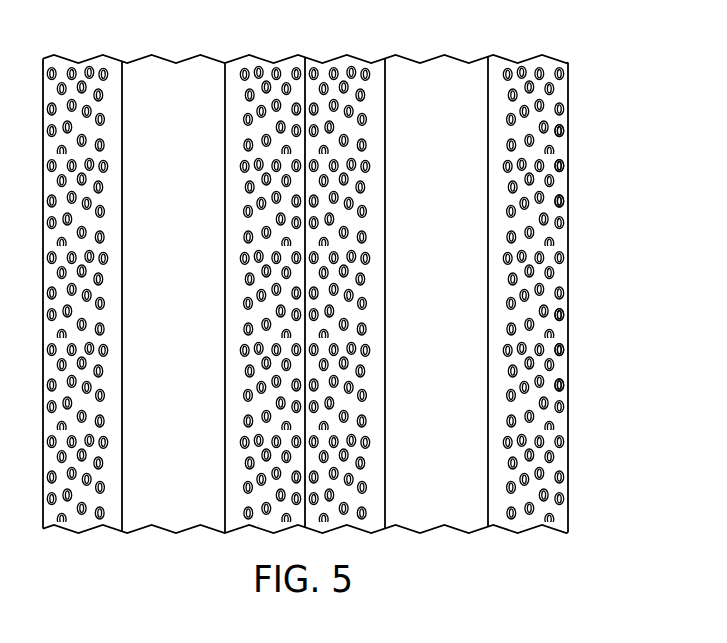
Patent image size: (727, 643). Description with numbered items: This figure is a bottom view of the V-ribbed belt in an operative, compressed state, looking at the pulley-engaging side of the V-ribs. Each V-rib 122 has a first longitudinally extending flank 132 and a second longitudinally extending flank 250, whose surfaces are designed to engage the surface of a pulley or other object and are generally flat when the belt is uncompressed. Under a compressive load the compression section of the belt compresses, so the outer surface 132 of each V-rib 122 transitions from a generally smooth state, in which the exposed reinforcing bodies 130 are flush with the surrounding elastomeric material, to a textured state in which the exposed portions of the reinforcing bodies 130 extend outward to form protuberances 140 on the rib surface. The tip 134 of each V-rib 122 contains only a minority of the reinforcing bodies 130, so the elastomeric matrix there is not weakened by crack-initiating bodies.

The V-rib 122 is at (449, 65).
The second longitudinally extending flank 250 is at (361, 63).
The first longitudinally extending flank 132 is at (562, 90).
The reinforcing bodies 130 is at (559, 138).
The protuberances 140 is at (564, 314).
The tip 134 is at (430, 522).